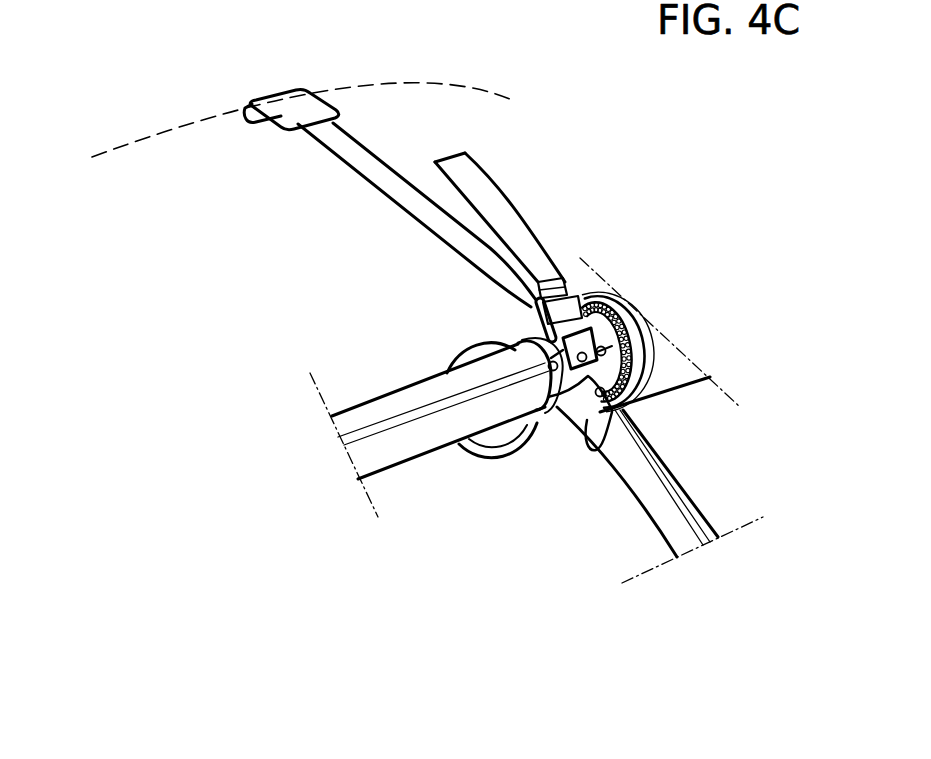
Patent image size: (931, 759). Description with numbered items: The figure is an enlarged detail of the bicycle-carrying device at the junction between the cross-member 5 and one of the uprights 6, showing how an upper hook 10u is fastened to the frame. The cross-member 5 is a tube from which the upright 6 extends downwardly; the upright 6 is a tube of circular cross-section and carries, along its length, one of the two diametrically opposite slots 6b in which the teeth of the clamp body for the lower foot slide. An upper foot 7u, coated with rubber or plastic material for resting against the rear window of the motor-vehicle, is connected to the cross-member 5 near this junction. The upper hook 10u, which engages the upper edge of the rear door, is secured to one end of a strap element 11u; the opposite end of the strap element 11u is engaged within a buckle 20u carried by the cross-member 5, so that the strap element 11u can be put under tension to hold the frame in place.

The upper hook 10u is at (277, 124).
The strap element 11u is at (386, 206).
The buckle 20u is at (534, 326).
The cross-member 5 is at (388, 396).
The upper foot 7u is at (471, 456).
The upright 6 is at (621, 477).
The slot 6b is at (667, 473).